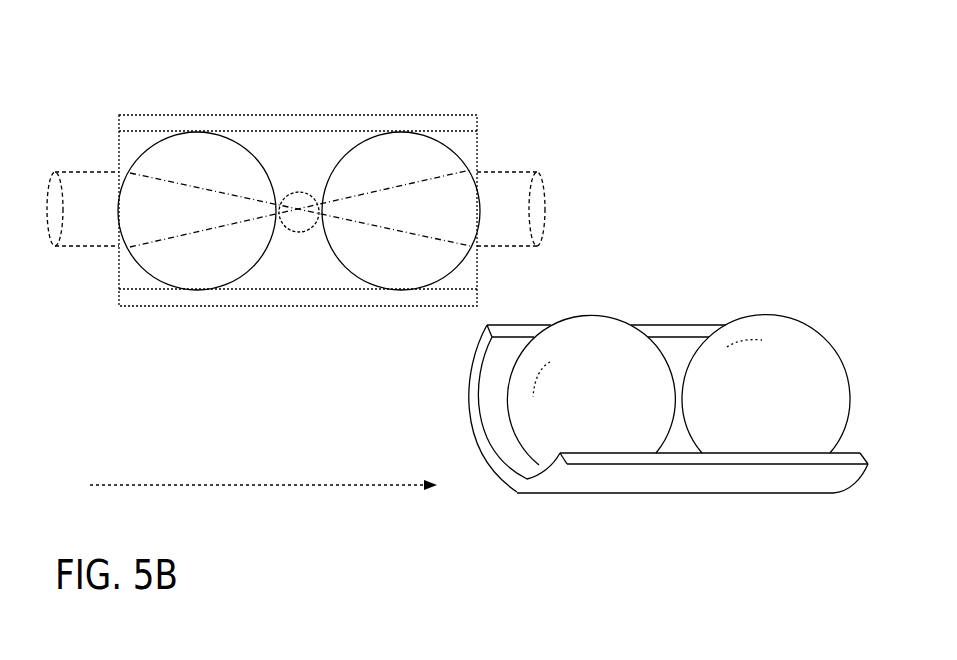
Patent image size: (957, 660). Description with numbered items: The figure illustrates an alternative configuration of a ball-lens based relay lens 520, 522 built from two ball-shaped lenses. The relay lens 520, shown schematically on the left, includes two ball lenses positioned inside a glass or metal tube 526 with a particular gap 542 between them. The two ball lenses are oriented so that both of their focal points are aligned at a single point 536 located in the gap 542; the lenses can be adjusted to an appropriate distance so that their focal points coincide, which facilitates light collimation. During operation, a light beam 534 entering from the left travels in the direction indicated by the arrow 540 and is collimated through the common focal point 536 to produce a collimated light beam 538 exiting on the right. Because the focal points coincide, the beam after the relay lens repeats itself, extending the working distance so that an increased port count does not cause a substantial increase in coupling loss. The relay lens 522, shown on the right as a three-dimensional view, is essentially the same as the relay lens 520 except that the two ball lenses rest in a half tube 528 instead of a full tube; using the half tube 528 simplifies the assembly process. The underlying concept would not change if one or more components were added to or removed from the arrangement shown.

The relay lens 520 is at (402, 80).
The relay lens 522 is at (758, 278).
The glass or metal tube 526 is at (172, 120).
The half tube 528 is at (473, 420).
The light beam 534 is at (103, 228).
The focal point 536 is at (298, 234).
The collimated light beam 538 is at (521, 218).
The arrow 540 is at (263, 470).
The gap 542 is at (298, 147).